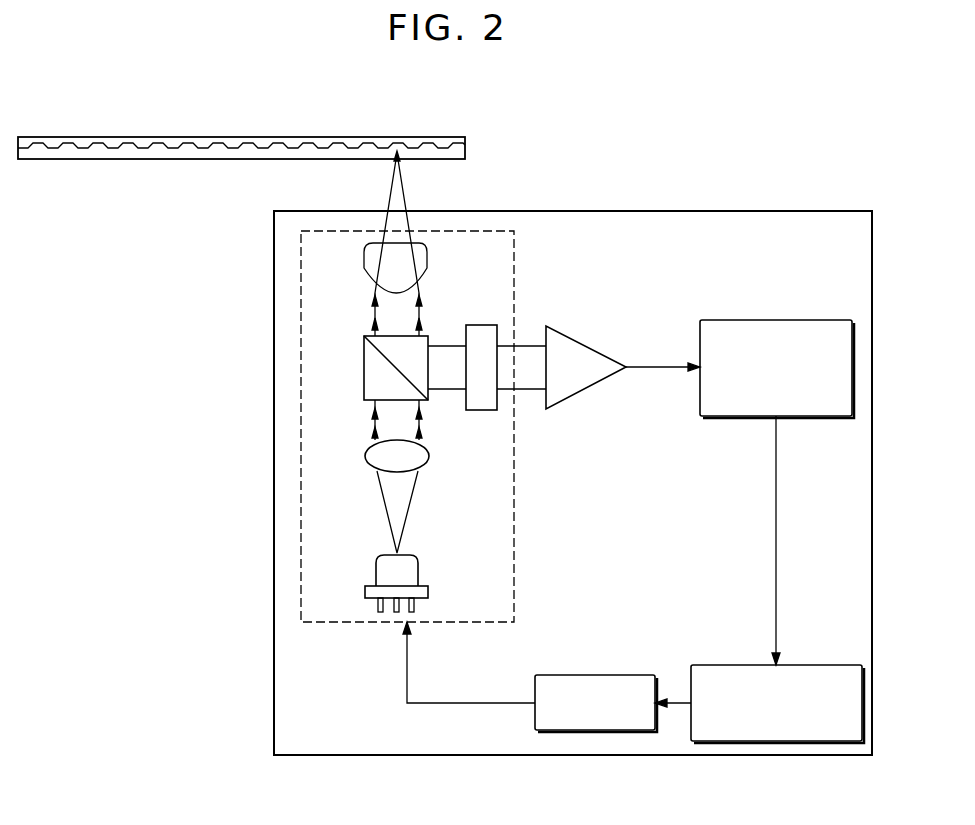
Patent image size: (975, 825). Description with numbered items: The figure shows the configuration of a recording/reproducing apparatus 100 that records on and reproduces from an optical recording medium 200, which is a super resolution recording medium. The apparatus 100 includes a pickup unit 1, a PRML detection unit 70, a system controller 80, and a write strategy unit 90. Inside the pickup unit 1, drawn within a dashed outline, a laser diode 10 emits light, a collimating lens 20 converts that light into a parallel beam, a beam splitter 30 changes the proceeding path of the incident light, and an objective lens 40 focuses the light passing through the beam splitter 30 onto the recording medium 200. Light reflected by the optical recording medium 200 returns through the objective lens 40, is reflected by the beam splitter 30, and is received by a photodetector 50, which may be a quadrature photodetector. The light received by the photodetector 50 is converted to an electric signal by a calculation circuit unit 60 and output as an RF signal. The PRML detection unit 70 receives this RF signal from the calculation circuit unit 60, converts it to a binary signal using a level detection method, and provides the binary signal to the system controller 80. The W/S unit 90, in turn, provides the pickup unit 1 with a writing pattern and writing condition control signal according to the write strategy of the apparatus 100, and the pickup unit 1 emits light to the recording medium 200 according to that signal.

The pickup unit 1 is at (514, 514).
The laser diode 10 is at (376, 572).
The collimating lens 20 is at (365, 456).
The beam splitter 30 is at (364, 357).
The objective lens 40 is at (364, 262).
The photodetector 50 is at (488, 325).
The calculation circuit unit 60 is at (586, 345).
The PRML detection unit 70 is at (776, 320).
The system controller 80 is at (718, 665).
The write strategy unit 90 is at (611, 675).
The recording/reproducing apparatus 100 is at (655, 211).
The optical recording medium 200 is at (373, 136).